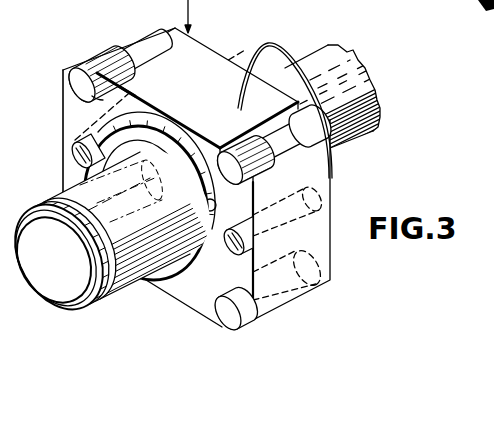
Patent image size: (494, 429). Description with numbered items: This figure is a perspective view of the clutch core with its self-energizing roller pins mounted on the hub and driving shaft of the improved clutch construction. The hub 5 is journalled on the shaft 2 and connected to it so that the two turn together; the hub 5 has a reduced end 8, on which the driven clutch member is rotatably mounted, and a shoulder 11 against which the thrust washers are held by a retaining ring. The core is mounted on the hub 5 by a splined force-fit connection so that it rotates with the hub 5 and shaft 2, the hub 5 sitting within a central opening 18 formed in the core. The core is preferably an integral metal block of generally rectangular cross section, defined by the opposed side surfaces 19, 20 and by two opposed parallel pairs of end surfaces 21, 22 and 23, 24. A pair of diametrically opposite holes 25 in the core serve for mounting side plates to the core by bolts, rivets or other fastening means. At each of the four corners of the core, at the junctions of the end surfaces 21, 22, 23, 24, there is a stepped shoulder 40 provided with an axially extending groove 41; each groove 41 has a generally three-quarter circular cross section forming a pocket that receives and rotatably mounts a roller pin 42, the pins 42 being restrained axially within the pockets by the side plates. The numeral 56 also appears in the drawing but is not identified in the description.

The shaft 2 is at (55, 282).
The hub 5 is at (181, 266).
The reduced end 8 is at (117, 263).
The shoulder 11 is at (132, 150).
The central opening 18 is at (222, 197).
The side surface 19 is at (78, 125).
The side surface 20 is at (228, 52).
The end surface 21 is at (240, 99).
The end surface 22 is at (147, 272).
The end surface 23 is at (63, 105).
The end surface 24 is at (307, 232).
The holes 25 is at (75, 160).
The stepped shoulder 40 is at (103, 45).
The groove 41 is at (200, 327).
The roller pin 42 is at (133, 44).
The terminal 56 is at (436, 2).